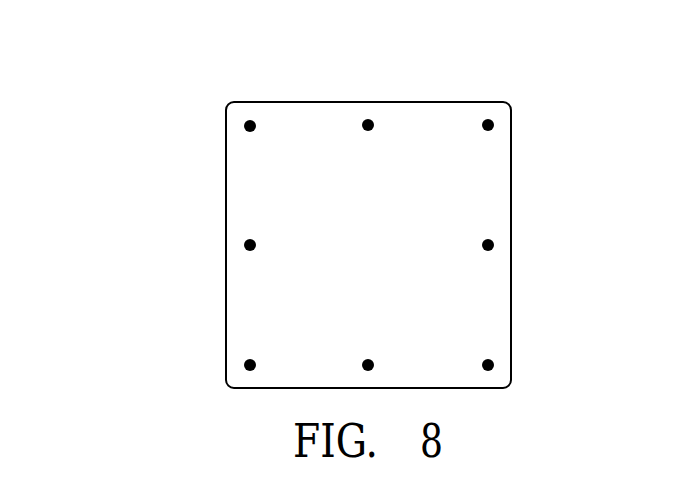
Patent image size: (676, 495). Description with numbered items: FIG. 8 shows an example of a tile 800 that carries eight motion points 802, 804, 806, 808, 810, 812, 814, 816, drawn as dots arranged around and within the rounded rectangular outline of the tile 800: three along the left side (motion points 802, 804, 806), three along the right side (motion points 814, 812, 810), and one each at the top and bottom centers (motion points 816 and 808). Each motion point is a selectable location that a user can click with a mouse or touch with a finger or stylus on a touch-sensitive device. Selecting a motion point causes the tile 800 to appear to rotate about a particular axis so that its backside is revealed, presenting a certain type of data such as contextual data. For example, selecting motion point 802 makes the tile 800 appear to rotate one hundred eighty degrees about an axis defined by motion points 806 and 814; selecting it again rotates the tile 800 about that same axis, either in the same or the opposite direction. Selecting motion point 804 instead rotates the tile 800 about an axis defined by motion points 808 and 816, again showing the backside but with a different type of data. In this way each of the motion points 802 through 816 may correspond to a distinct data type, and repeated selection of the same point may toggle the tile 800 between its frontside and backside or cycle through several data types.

The tile 800 is at (226, 101).
The motion point 802 is at (245, 126).
The motion point 804 is at (245, 245).
The motion point 806 is at (245, 365).
The motion point 808 is at (368, 360).
The motion point 810 is at (493, 365).
The motion point 812 is at (493, 245).
The motion point 814 is at (493, 125).
The motion point 816 is at (368, 119).